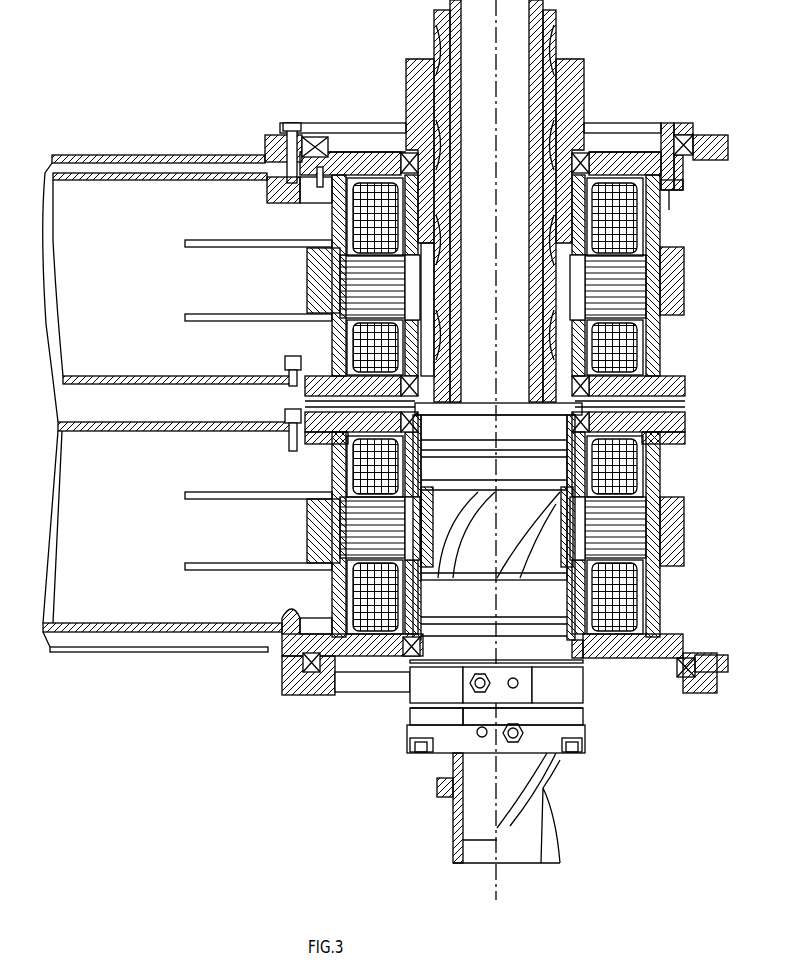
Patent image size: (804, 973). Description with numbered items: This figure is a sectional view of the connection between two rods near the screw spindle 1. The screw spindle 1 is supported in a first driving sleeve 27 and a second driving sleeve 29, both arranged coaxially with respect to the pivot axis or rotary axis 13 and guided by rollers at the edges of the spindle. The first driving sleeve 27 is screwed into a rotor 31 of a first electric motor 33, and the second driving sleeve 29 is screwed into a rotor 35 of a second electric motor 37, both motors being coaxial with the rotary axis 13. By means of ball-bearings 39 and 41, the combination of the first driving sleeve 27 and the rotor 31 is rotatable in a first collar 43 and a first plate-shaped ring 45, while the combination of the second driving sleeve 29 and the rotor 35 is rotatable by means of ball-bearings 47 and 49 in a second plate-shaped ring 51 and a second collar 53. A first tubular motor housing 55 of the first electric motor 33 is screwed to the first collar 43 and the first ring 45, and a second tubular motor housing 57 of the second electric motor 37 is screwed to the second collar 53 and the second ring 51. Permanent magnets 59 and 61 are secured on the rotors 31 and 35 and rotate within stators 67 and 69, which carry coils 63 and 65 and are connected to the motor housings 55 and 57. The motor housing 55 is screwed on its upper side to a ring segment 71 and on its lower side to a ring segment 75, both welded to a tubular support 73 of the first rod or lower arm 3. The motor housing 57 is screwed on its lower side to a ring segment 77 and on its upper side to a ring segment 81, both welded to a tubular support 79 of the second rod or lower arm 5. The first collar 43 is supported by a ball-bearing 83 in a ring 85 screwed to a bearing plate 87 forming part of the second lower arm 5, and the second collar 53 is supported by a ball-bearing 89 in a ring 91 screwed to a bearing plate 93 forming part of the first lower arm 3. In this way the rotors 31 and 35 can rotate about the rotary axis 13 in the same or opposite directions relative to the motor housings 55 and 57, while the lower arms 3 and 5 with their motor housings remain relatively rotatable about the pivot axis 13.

The screw spindle 1 is at (453, 50).
The first rod or lower arm 3 is at (192, 401).
The second rod or lower arm 5 is at (166, 405).
The pivot axis or rotary axis 13 is at (500, 883).
The first driving sleeve 27 is at (411, 107).
The second driving sleeve 29 is at (425, 687).
The rotor 31 is at (425, 278).
The first electric motor 33 is at (358, 270).
The rotor 35 is at (427, 517).
The second electric motor 37 is at (358, 505).
The ball-bearing 39 is at (416, 165).
The ball-bearing 41 is at (535, 395).
The first collar 43 is at (638, 160).
The first plate-shaped ring 45 is at (665, 393).
The ball-bearing 47 is at (418, 425).
The ball-bearing 49 is at (577, 642).
The second plate-shaped ring 51 is at (665, 428).
The second collar 53 is at (686, 636).
The first tubular motor housing 55 is at (672, 270).
The second tubular motor housing 57 is at (673, 517).
The permanent magnet 59 is at (428, 302).
The permanent magnet 61 is at (415, 547).
The coil 63 is at (540, 227).
The coil 65 is at (597, 452).
The stator 67 is at (626, 300).
The stator 69 is at (633, 547).
The ring segment 71 is at (283, 183).
The tubular support 73 is at (142, 181).
The ring segment 75 is at (285, 364).
The ring segment 77 is at (285, 614).
The tubular support 79 is at (127, 431).
The ring segment 81 is at (288, 440).
The ball-bearing 83 is at (728, 147).
The ring 85 is at (272, 135).
The bearing plate 87 is at (175, 155).
The ball-bearing 89 is at (728, 664).
The ring 91 is at (268, 672).
The bearing plate 93 is at (142, 652).